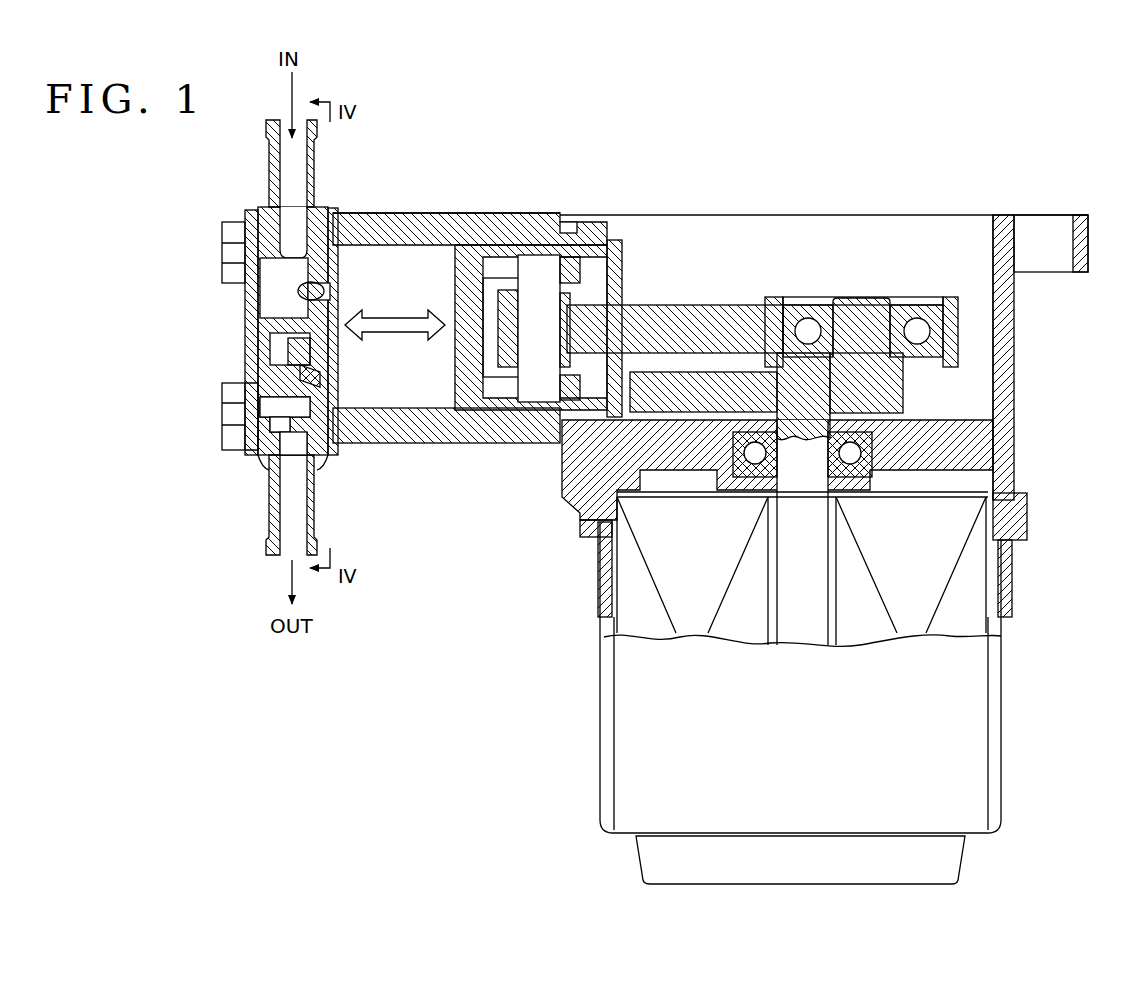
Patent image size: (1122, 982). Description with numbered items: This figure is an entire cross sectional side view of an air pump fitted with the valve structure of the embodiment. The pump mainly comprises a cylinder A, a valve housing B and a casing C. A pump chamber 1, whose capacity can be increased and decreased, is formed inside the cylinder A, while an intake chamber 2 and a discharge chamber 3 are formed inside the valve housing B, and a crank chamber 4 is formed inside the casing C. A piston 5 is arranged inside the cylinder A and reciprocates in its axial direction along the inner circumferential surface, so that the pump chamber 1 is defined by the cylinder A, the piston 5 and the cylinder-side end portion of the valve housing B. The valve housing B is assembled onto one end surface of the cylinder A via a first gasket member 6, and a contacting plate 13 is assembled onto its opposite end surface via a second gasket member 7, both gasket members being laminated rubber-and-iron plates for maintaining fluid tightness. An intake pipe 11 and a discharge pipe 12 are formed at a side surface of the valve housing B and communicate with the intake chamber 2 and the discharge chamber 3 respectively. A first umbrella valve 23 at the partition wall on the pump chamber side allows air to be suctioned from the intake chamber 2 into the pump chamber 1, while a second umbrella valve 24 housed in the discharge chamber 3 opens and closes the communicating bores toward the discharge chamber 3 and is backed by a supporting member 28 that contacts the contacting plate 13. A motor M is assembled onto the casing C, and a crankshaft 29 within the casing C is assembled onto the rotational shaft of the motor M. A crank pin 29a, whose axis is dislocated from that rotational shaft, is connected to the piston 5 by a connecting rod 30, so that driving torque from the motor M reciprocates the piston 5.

The pump chamber 1 is at (393, 380).
The intake chamber 2 is at (258, 282).
The discharge chamber 3 is at (290, 430).
The crank chamber 4 is at (921, 252).
The piston 5 is at (456, 348).
The first gasket member 6 is at (338, 432).
The second gasket member 7 is at (268, 302).
The intake pipe 11 is at (318, 150).
The discharge pipe 12 is at (272, 508).
The contacting plate 13 is at (250, 420).
The first umbrella valve 23 is at (330, 292).
The second umbrella valve 24 is at (258, 351).
The supporting member 28 is at (258, 396).
The crankshaft 29 is at (903, 398).
The crank pin 29a is at (858, 297).
The connecting rod 30 is at (694, 303).
The cylinder A is at (460, 212).
The valve housing B is at (252, 238).
The casing C is at (1014, 355).
The motor M is at (1001, 700).